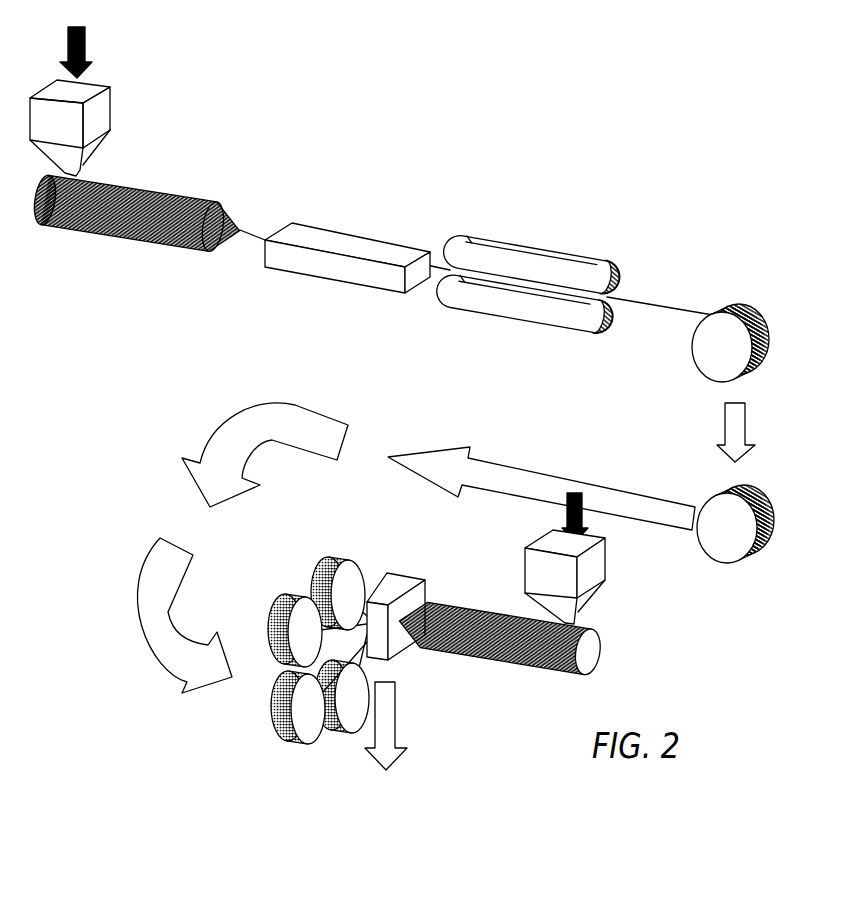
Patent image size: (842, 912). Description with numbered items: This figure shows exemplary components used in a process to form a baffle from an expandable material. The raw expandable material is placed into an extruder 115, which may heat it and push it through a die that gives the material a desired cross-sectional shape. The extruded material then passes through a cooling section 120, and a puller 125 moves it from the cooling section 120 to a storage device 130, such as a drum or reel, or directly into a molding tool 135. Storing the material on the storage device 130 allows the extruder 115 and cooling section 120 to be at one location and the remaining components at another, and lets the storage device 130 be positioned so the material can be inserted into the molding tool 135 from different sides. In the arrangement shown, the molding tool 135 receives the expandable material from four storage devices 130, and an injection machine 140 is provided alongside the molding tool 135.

The extruder 115 is at (165, 187).
The cooling section 120 is at (357, 235).
The puller 125 is at (537, 242).
The storage device 130 is at (732, 303).
The molding tool 135 is at (400, 577).
The injection machine 140 is at (517, 670).